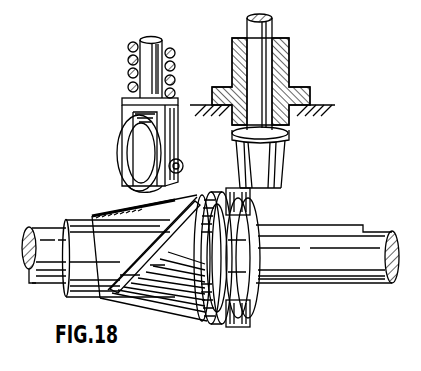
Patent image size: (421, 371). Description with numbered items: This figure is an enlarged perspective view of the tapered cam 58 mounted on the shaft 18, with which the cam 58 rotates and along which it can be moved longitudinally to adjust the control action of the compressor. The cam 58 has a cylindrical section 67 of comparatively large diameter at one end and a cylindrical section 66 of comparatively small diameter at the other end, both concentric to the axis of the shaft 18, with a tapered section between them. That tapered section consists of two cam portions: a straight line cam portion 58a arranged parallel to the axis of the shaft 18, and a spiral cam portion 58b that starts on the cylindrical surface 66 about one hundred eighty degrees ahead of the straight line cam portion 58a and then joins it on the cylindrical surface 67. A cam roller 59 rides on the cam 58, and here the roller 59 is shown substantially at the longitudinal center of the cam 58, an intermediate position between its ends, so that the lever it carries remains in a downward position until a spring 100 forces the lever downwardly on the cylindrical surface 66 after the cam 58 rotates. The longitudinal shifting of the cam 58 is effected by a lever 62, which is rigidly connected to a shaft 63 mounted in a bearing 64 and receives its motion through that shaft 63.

The shaft 18 is at (318, 272).
The tapered cam 58 is at (150, 308).
The straight line cam portion 58a is at (138, 207).
The spiral cam portion 58b is at (175, 232).
The cam roller 59 is at (138, 143).
The lever 62 is at (288, 170).
The shaft 63 is at (262, 30).
The bearing 64 is at (282, 65).
The cylindrical section of comparatively small diameter 66 is at (80, 219).
The cylindrical section of comparatively large diameter 67 is at (217, 192).
The spring 100 is at (130, 62).